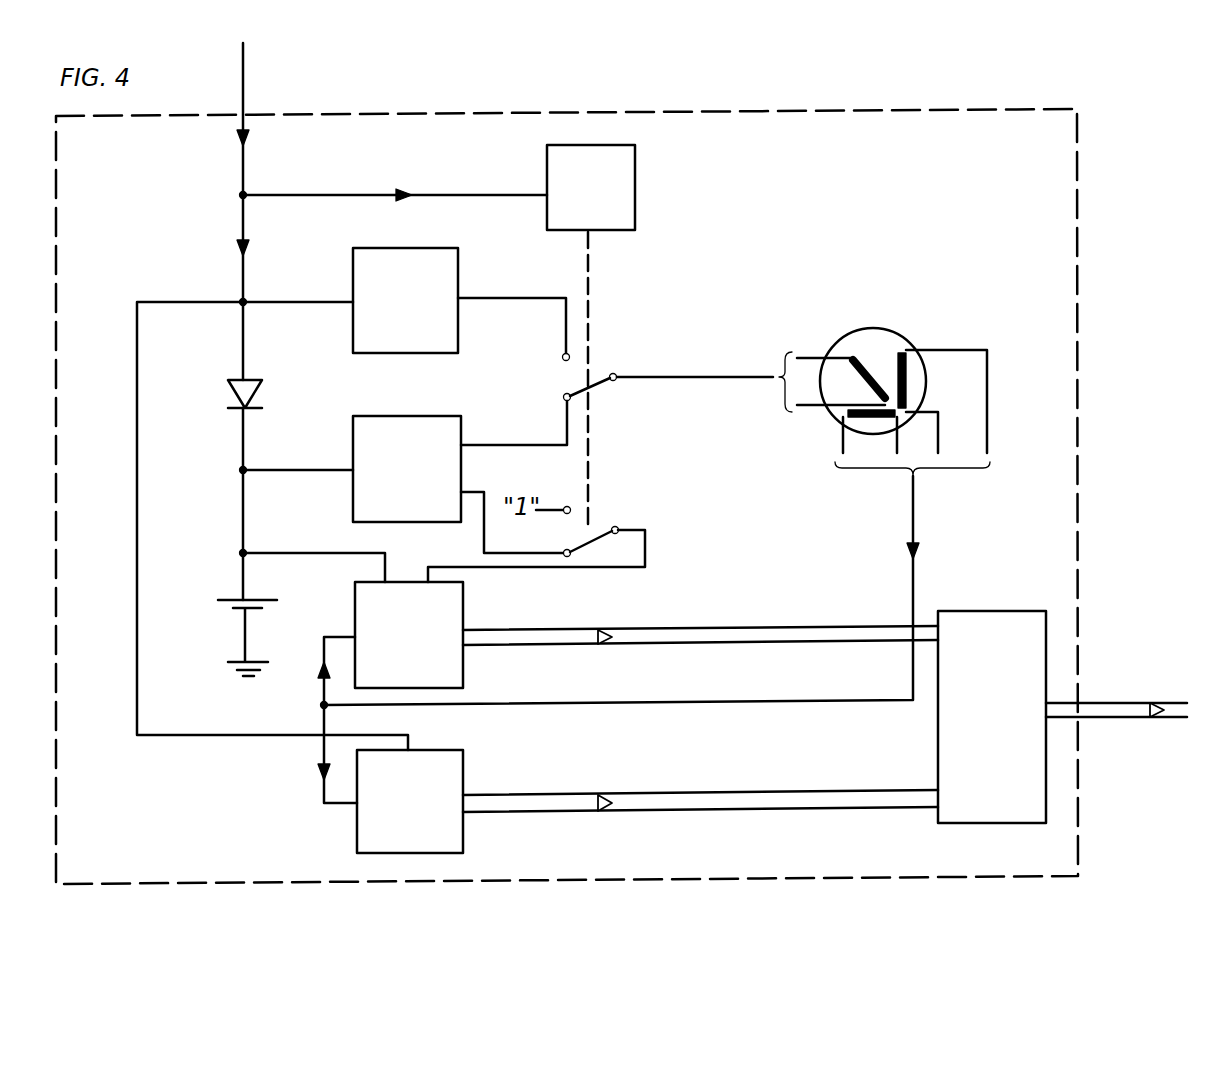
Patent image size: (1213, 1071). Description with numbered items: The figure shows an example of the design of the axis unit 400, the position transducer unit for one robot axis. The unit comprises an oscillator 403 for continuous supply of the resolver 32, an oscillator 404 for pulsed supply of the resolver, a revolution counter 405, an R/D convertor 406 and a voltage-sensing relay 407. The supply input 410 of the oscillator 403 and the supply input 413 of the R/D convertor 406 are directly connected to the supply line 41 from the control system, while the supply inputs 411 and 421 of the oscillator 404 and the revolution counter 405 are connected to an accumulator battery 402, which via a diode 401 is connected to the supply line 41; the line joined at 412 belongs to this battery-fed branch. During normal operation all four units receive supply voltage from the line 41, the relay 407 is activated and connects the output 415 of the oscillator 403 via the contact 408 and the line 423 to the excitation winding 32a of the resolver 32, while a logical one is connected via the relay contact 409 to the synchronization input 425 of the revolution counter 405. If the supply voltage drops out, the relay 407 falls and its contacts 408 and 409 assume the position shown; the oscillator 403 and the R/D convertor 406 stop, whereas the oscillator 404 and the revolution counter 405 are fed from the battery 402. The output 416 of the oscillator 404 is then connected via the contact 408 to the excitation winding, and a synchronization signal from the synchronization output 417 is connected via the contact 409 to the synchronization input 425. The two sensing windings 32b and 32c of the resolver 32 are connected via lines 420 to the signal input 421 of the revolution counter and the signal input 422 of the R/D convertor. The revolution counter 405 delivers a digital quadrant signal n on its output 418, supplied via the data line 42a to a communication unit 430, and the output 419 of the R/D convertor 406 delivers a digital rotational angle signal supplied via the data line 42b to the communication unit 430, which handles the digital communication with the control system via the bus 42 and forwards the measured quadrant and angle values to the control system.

The axis unit 400 is at (1005, 133).
The supply line 41 is at (243, 85).
The voltage-sensing relay 407 is at (603, 155).
The oscillator 403 is at (430, 265).
The oscillator 404 is at (415, 435).
The revolution counter 405 is at (460, 615).
The R/D convertor 406 is at (463, 778).
The communication unit 430 is at (1010, 625).
The diode 401 is at (260, 395).
The accumulator battery 402 is at (235, 600).
The contact 408 is at (609, 382).
The relay contact 409 is at (605, 530).
The supply input 410 is at (352, 300).
The supply input 411 is at (352, 470).
The line 412 is at (410, 552).
The supply input 413 is at (408, 748).
The output 415 is at (462, 298).
The output 416 is at (463, 446).
The synchronization output 417 is at (463, 492).
The output 418 is at (465, 650).
The output 419 is at (466, 815).
The lines 420 is at (913, 580).
The signal input 421 is at (340, 637).
The signal input 422 is at (352, 812).
The line 423 is at (697, 375).
The synchronization input 425 is at (428, 580).
The resolver 32 is at (882, 382).
The excitation winding 32a is at (840, 370).
The sensing winding 32b is at (918, 365).
The sensing winding 32c is at (858, 418).
The bus 42 is at (1125, 702).
The data line 42a is at (718, 628).
The data line 42b is at (728, 792).